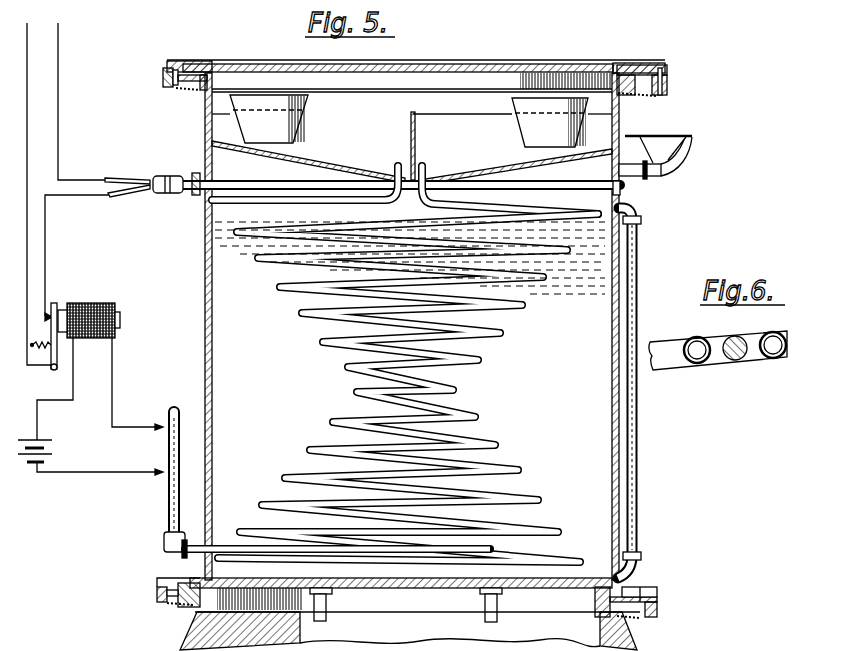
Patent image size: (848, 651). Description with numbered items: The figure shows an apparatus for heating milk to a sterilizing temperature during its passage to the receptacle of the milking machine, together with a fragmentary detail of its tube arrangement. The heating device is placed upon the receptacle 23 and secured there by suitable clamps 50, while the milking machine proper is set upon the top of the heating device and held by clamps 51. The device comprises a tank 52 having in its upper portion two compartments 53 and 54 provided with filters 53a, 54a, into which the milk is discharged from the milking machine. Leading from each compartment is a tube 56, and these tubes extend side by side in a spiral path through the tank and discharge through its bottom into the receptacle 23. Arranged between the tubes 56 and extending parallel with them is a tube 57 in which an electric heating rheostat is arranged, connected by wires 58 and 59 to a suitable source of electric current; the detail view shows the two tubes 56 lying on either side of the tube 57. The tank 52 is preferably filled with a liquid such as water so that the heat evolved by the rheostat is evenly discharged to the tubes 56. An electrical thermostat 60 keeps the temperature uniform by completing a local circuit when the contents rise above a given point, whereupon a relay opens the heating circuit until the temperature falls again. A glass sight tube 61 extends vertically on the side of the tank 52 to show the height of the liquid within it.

In FIG. 5, the receptacle 23 is at (190, 628).
In FIG. 5, the clamps 50 is at (157, 589).
In FIG. 5, the clamps 51 is at (165, 74).
In FIG. 5, the tank 52 is at (218, 345).
In FIG. 5, the compartment 53 is at (215, 135).
In FIG. 5, the filter 53a is at (290, 127).
In FIG. 5, the compartment 54 is at (604, 131).
In FIG. 5, the filter 54a is at (537, 132).
In FIG. 5, the tube 56 is at (397, 180).
In FIG. 6, the tube 56 is at (693, 342).
In FIG. 5, the tube 57 is at (184, 193).
In FIG. 6, the tube 57 is at (735, 362).
In FIG. 5, the wire 58 is at (114, 178).
In FIG. 5, the wire 59 is at (122, 196).
In FIG. 5, the electrical thermostat 60 is at (172, 416).
In FIG. 5, the glass sight tube 61 is at (672, 150).